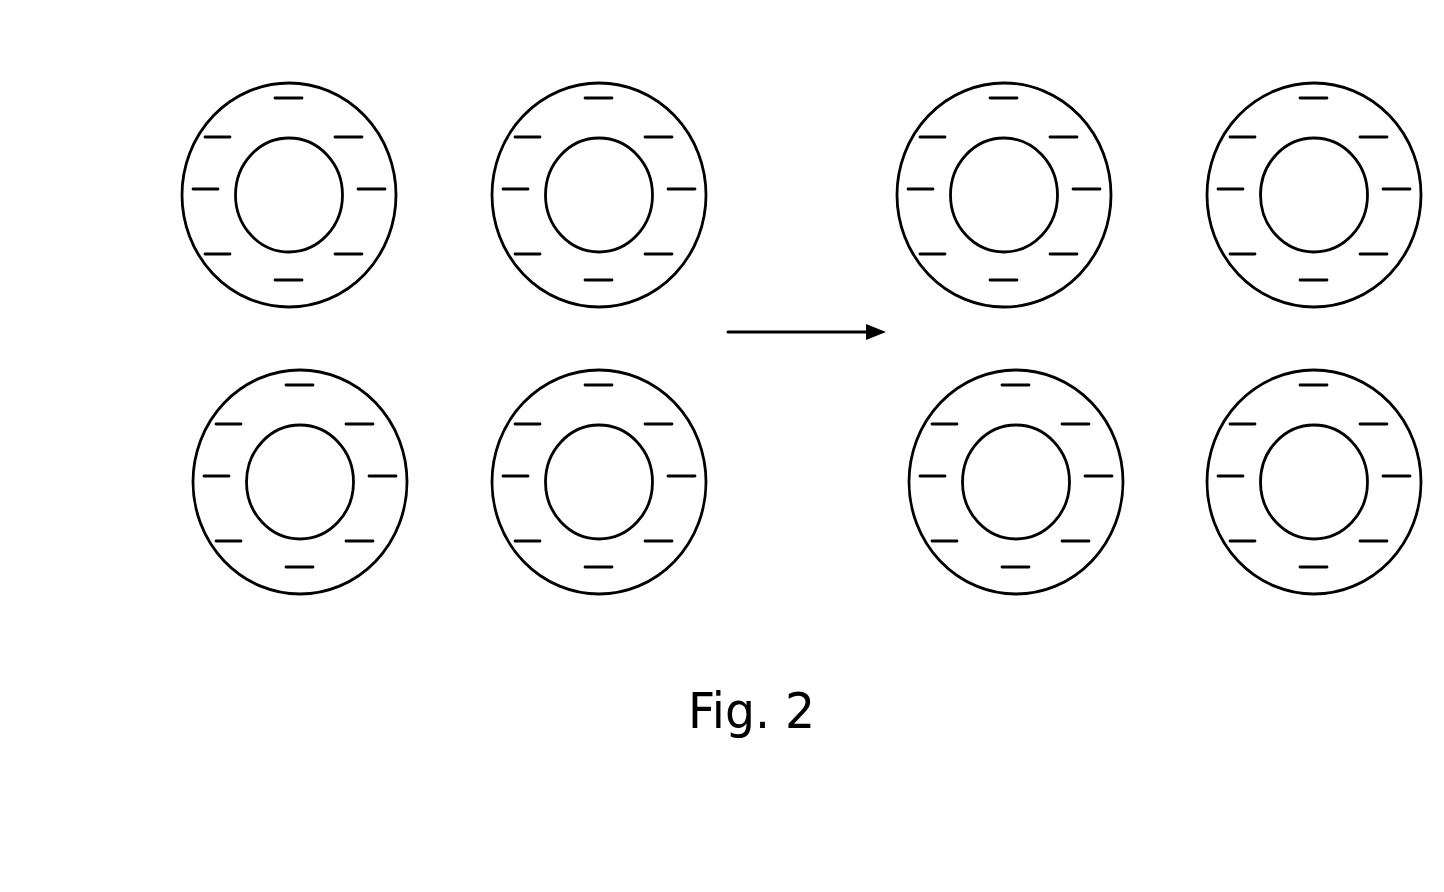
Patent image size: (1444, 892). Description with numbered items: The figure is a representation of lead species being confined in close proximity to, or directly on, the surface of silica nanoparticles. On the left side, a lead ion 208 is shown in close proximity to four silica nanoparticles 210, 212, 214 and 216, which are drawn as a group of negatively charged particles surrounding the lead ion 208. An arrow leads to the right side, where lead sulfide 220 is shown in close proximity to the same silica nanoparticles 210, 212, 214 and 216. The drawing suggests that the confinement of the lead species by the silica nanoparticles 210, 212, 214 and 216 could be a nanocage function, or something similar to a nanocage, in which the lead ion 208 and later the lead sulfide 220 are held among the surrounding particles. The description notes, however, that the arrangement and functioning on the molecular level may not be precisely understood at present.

The lead ion 208 is at (458, 372).
The silica nanoparticle 210 is at (237, 120).
The silica nanoparticle 212 is at (562, 120).
The silica nanoparticle 214 is at (238, 421).
The silica nanoparticle 216 is at (642, 552).
The lead sulfide 220 is at (1182, 337).